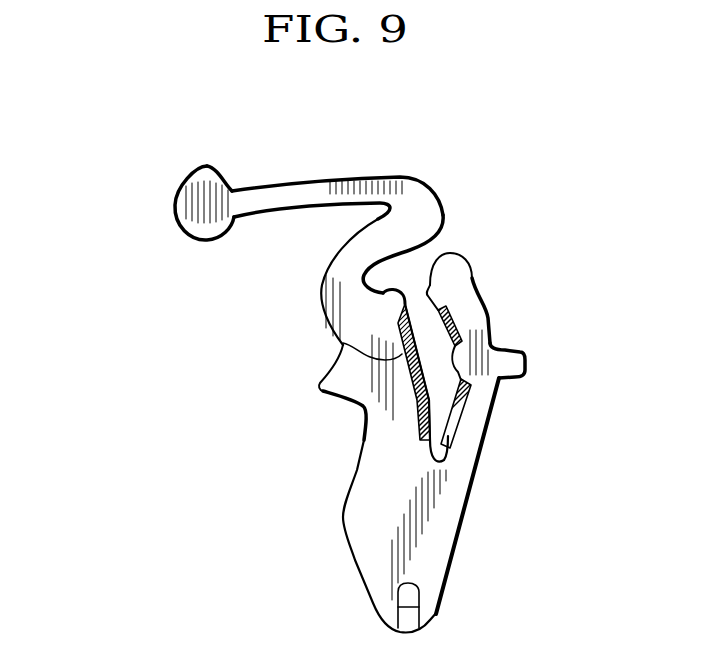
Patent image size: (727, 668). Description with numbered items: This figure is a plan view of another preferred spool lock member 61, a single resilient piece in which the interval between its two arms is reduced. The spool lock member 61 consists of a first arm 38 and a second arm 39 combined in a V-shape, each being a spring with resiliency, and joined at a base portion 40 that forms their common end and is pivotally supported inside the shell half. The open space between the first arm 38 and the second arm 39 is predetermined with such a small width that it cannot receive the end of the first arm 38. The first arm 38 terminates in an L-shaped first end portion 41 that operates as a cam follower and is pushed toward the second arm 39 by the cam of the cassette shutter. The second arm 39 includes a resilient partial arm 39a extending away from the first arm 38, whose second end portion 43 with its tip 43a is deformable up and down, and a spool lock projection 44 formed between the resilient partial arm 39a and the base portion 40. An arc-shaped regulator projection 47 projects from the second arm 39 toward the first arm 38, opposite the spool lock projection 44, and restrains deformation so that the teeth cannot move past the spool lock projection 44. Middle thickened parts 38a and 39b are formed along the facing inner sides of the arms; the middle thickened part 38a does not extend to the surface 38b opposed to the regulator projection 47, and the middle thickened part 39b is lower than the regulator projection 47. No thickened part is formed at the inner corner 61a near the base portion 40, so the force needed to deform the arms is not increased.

The first arm 38 is at (477, 397).
The middle thickened part 38a is at (450, 327).
The surface 38b is at (443, 300).
The second arm 39 is at (323, 282).
The resilient partial arm 39a is at (310, 178).
The middle thickened part 39b is at (343, 343).
The base portion 40 is at (412, 610).
The first end portion 41 is at (523, 353).
The second end portion 43 is at (158, 204).
The tip of ball contact 43a is at (207, 166).
The spool lock projection 44 is at (320, 388).
The regulator projection 47 is at (400, 297).
The spool lock member 61 is at (325, 520).
The inner corner 61a is at (443, 460).